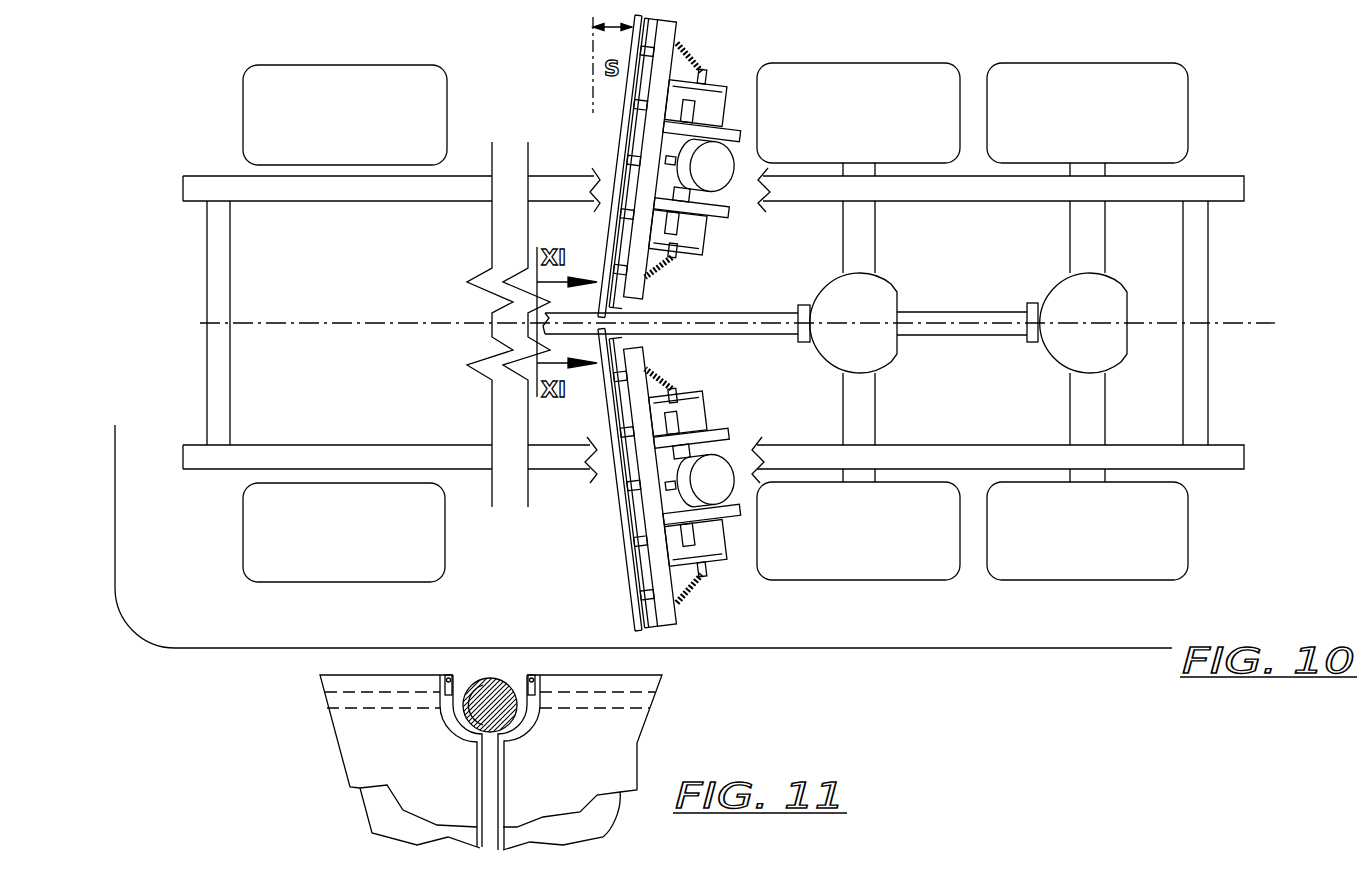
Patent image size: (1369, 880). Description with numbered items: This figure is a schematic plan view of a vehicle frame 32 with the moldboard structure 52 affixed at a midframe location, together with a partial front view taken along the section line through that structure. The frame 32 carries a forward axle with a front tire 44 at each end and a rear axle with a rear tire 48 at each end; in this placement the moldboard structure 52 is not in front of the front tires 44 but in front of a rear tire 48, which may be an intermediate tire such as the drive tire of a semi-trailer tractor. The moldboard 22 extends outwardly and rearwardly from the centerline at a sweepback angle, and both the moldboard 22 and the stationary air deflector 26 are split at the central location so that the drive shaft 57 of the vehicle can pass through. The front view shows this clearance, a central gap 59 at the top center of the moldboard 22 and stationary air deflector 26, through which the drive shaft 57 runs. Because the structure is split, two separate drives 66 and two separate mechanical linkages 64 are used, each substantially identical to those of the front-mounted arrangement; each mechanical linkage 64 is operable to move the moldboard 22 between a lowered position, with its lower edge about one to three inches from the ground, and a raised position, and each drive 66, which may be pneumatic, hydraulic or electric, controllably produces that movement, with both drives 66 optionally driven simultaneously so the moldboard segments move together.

In FIG. 10, the moldboard 22 is at (635, 572).
In FIG. 11, the moldboard 22 is at (387, 812).
In FIG. 10, the stationary air deflector 26 is at (617, 504).
In FIG. 11, the stationary air deflector 26 is at (383, 747).
In FIG. 10, the frame 32 is at (465, 192).
In FIG. 10, the front tire 44 is at (346, 88).
In FIG. 10, the rear tire 48 is at (803, 100).
In FIG. 10, the moldboard structure 52 is at (717, 255).
In FIG. 10, the drive shaft 57 is at (752, 313).
In FIG. 11, the drive shaft 57 is at (497, 712).
In FIG. 11, the central gap 59 is at (473, 730).
In FIG. 10, the mechanical linkage 64 is at (675, 279).
In FIG. 10, the drive 66 is at (739, 197).